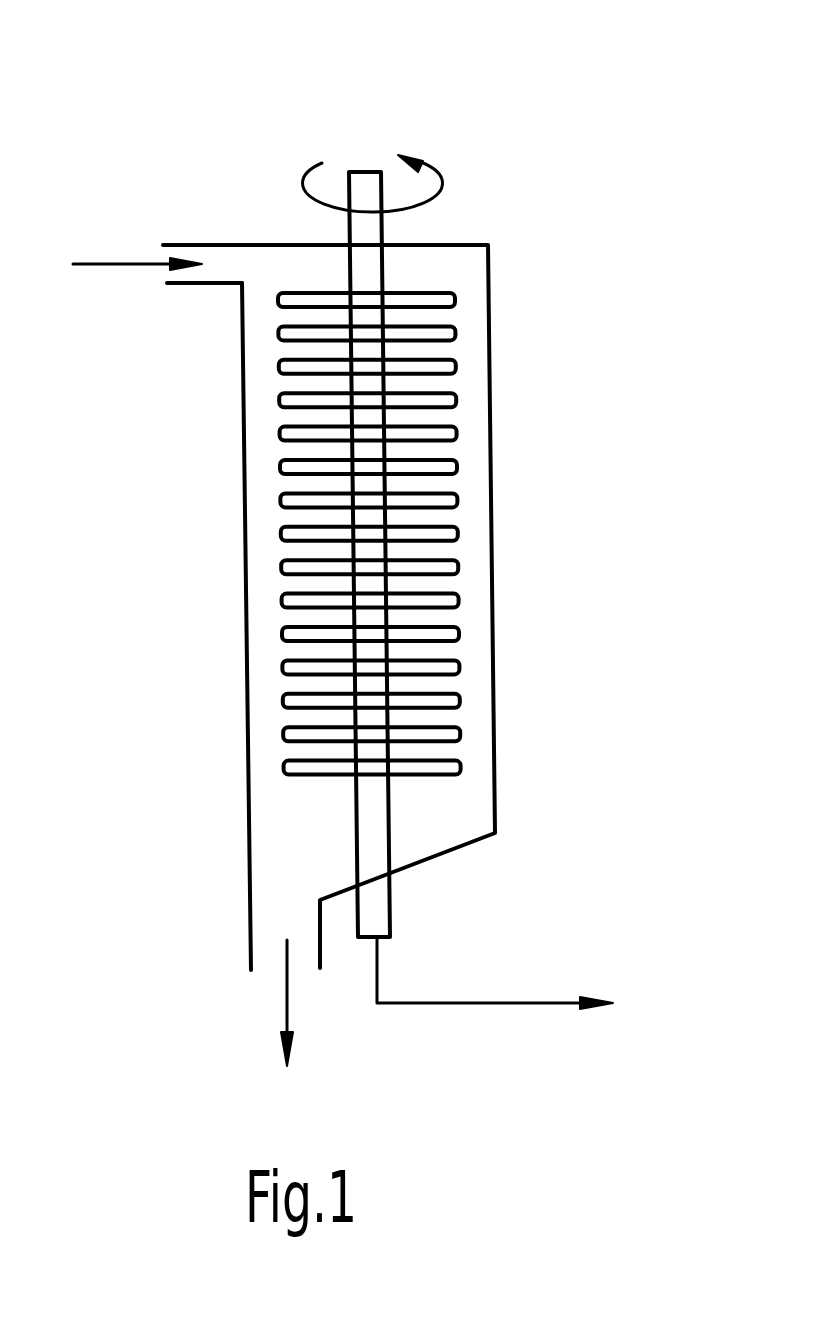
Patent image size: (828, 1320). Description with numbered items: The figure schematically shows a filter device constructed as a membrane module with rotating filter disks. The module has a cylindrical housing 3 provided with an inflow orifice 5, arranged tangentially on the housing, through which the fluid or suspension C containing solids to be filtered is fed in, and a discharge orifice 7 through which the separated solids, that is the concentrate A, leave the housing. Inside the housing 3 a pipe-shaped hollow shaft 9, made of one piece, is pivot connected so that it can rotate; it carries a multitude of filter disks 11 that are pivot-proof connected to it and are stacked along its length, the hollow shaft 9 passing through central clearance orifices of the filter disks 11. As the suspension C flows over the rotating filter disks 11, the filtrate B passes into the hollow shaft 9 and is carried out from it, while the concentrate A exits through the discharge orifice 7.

The cylindrical housing 3 is at (492, 542).
The inflow orifice 5 is at (207, 245).
The discharge orifice 7 is at (250, 920).
The hollow shaft 9 is at (362, 170).
The filter disks 11 is at (456, 400).
The concentrate A is at (288, 1023).
The filtrate B is at (597, 998).
The fluid or suspension containing solids C is at (183, 277).